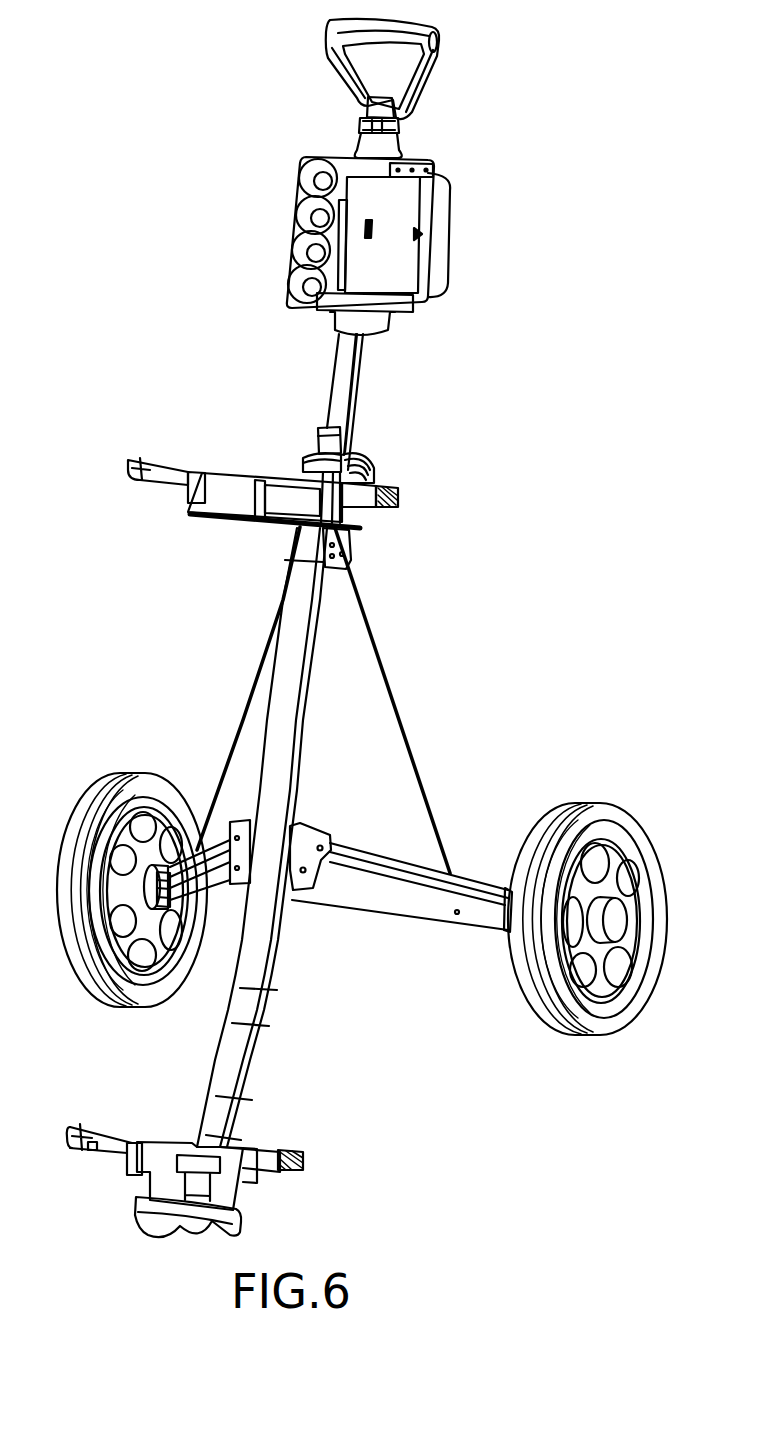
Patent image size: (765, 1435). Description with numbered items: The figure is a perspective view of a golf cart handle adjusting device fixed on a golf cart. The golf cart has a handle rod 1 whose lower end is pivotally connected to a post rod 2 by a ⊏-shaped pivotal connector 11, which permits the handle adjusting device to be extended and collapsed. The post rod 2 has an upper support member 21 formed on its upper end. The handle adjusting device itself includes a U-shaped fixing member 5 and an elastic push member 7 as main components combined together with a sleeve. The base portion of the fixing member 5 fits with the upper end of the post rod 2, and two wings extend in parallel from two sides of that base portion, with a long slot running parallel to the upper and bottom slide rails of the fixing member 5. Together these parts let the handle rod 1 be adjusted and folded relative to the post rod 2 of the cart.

The handle rod 1 is at (347, 382).
The post rod 2 is at (300, 638).
The U-shaped fixing member 5 is at (298, 462).
The elastic push member 7 is at (314, 427).
The ⊏-shaped pivotal connector 11 is at (337, 557).
The upper support member 21 is at (223, 510).